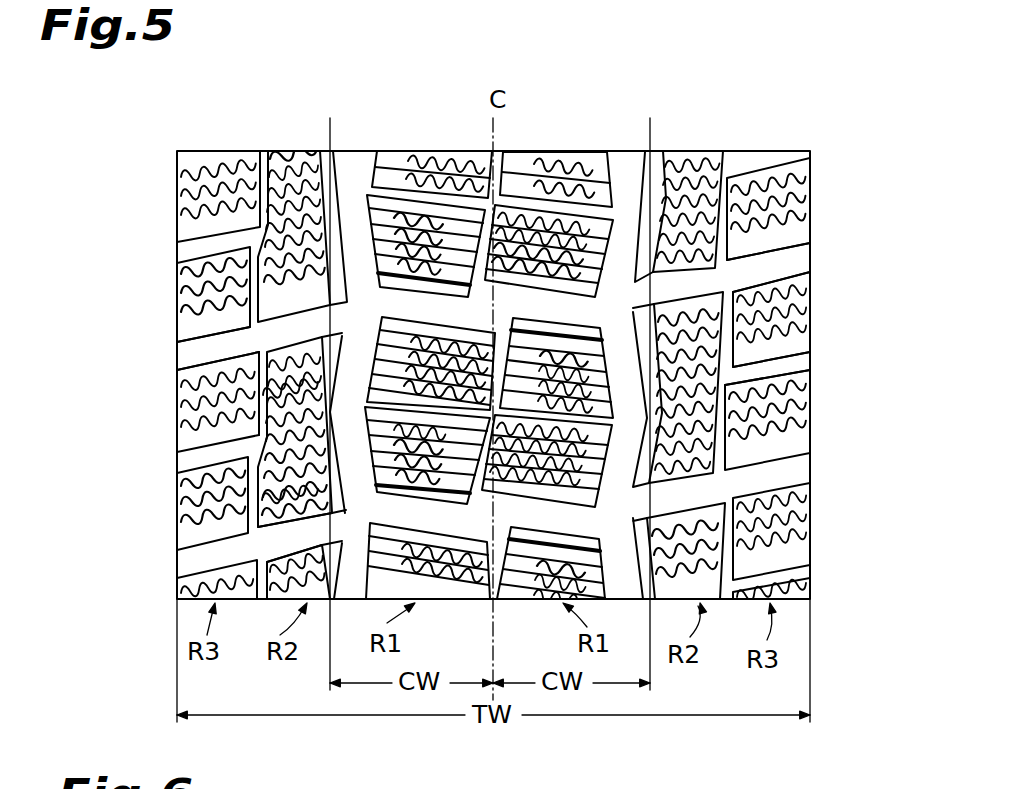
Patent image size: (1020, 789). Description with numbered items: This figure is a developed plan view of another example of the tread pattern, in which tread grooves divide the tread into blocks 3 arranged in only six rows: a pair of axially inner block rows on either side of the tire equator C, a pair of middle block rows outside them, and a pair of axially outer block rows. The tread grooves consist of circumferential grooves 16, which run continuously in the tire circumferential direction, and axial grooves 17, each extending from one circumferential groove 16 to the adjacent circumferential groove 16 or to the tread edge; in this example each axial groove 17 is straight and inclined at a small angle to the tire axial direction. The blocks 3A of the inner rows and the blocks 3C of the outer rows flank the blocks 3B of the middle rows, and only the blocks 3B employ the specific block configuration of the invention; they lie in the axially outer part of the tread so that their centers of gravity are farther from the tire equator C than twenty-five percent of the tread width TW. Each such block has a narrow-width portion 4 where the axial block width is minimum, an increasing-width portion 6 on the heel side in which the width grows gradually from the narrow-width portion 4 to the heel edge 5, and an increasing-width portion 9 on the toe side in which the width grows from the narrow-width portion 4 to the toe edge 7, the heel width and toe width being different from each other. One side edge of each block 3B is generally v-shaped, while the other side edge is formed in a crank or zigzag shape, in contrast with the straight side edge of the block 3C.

The blocks 3 is at (480, 328).
The center block 3A is at (443, 160).
The blocks in the middle block rows 3B is at (303, 165).
The block with straight side edge 3C is at (213, 163).
The narrow-width portion 4 is at (250, 443).
The heel edge 5 is at (288, 343).
The increasing-width portion on the block heel-side 6 is at (280, 383).
The toe edge 7 is at (287, 522).
The increasing-width portion on the block toe-side 9 is at (273, 493).
The circumferential grooves 16 is at (629, 168).
The axial grooves 17 is at (792, 265).